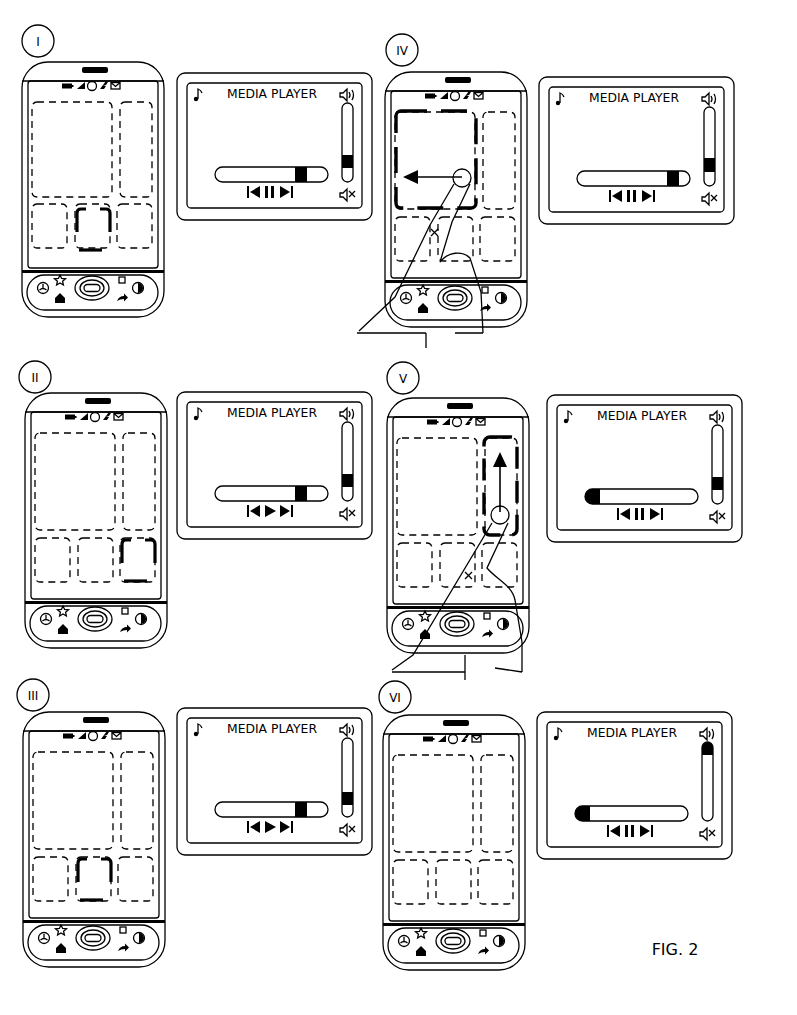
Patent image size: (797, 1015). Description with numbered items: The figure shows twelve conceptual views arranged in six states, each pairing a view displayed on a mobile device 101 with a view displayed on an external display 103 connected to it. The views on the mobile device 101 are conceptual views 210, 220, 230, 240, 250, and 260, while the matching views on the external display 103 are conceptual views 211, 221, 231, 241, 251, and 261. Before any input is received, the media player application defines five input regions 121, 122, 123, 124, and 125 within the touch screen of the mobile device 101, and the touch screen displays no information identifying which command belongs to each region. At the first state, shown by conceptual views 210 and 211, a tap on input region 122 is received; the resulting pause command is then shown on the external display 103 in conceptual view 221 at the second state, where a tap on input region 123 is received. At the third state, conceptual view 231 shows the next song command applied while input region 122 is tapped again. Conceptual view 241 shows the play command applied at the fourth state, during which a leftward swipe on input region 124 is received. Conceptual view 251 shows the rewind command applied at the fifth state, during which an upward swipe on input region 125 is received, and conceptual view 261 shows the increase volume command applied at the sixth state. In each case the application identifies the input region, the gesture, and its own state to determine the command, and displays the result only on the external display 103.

The mobile device 101 is at (128, 63).
The external display 103 is at (340, 73).
The input region 121 is at (48, 246).
The input region 122 is at (92, 248).
The input region 123 is at (132, 248).
The input region 124 is at (132, 196).
The input region 125 is at (72, 196).
The conceptual view 210 is at (115, 187).
The conceptual view 211 is at (274, 126).
The conceptual view 220 is at (96, 500).
The conceptual view 221 is at (274, 443).
The conceptual view 230 is at (94, 818).
The conceptual view 231 is at (274, 762).
The conceptual view 240 is at (442, 190).
The conceptual view 241 is at (636, 130).
The conceptual view 250 is at (458, 521).
The conceptual view 251 is at (644, 447).
The conceptual view 260 is at (454, 821).
The conceptual view 261 is at (634, 765).